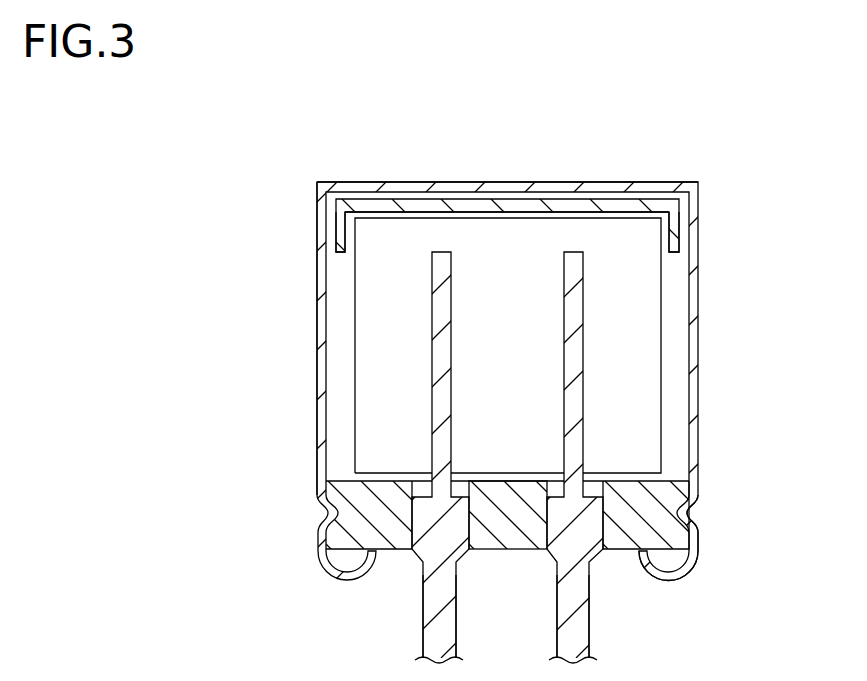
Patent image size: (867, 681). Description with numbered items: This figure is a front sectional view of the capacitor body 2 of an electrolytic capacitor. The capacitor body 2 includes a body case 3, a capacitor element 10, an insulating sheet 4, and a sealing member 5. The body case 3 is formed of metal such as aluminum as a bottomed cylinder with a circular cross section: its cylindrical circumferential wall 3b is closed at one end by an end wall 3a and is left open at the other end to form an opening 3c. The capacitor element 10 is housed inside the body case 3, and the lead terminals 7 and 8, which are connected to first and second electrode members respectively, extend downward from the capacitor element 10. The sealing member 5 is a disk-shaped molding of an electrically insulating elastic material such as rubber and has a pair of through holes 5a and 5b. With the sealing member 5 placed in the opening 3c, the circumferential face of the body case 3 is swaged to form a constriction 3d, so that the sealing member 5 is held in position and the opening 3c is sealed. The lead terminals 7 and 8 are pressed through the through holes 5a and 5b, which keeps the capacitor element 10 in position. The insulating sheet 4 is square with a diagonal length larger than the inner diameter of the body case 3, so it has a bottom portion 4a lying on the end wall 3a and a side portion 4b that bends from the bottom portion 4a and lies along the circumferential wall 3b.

The capacitor body 2 is at (652, 157).
The body case 3 is at (698, 253).
The end wall 3a is at (360, 182).
The circumferential wall 3b is at (315, 347).
The opening 3c is at (517, 555).
The constriction 3d is at (697, 515).
The insulating sheet 4 is at (410, 198).
The bottom portion 4a is at (512, 200).
The side portion 4b is at (337, 230).
The sealing member 5 is at (342, 518).
The through hole 5a is at (407, 538).
The through hole 5b is at (608, 532).
The lead terminal 7 is at (437, 588).
The lead terminal 8 is at (577, 597).
The capacitor element 10 is at (648, 363).